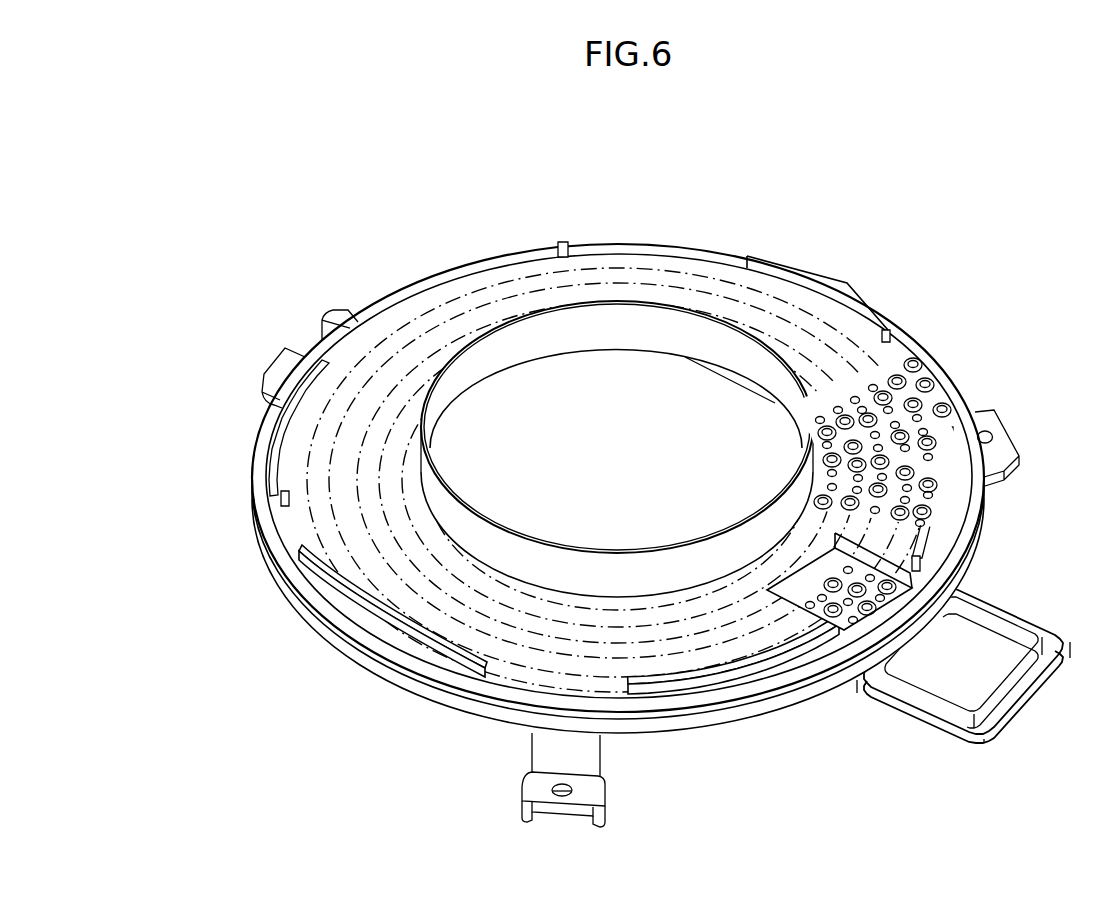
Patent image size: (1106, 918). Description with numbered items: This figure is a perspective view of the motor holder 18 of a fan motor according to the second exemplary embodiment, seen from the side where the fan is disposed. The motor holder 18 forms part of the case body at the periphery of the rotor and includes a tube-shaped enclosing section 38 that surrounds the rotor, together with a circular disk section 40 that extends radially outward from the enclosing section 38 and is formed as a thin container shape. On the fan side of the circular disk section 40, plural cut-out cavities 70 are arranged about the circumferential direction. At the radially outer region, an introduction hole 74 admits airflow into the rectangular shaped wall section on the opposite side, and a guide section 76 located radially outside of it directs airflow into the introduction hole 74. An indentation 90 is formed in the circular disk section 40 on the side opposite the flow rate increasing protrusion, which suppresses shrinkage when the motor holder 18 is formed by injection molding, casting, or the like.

The motor holder 18 is at (989, 273).
The enclosing section 38 is at (437, 507).
The circular disk section 40 is at (437, 608).
The cut-out cavities 70 is at (953, 407).
The introduction hole 74 is at (912, 640).
The guide section 76 is at (1026, 701).
The indentation 90 is at (806, 588).